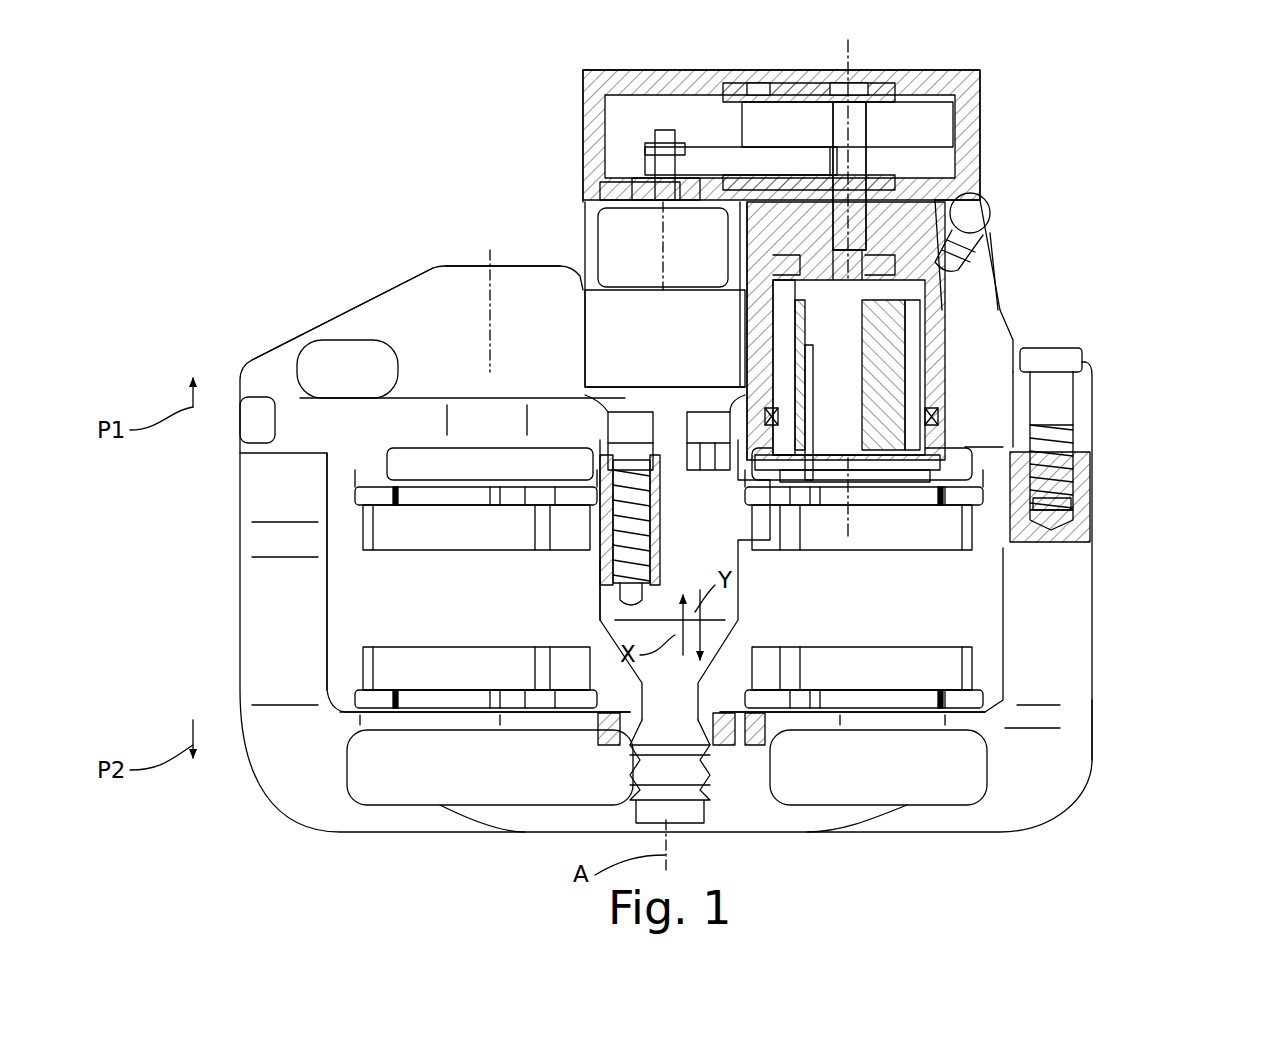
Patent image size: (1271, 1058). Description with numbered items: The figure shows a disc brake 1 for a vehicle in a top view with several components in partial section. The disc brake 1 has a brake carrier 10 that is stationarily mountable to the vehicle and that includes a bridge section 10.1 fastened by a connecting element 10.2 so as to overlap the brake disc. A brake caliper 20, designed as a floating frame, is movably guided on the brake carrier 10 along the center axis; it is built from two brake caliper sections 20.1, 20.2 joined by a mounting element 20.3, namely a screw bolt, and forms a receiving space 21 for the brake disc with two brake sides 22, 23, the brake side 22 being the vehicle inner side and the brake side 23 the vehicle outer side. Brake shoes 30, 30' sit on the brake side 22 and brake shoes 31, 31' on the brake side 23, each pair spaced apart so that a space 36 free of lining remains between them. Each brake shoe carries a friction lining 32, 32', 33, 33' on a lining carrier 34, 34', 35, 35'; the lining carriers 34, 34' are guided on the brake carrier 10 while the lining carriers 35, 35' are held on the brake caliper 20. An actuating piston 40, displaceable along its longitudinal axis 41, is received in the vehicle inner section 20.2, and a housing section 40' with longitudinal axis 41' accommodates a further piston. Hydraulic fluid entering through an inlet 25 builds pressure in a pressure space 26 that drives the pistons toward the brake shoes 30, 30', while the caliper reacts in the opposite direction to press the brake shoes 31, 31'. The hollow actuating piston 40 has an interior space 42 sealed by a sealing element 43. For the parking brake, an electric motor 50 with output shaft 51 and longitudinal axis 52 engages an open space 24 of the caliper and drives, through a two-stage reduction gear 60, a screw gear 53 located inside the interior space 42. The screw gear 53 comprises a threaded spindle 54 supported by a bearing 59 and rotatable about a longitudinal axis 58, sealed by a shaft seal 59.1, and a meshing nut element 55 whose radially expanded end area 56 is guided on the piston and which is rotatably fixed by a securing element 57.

The disc brake 1 is at (310, 298).
The brake carrier 10 is at (600, 405).
The bridge section 10.1 is at (618, 715).
The connecting element 10.2 is at (690, 405).
The brake caliper 20 is at (1013, 340).
The brake caliper section 20.1 is at (1075, 690).
The brake caliper section 20.2 is at (1080, 445).
The mounting element 20.3 is at (1055, 385).
The receiving space 21 is at (699, 631).
The brake side 22 is at (400, 565).
The brake side 23 is at (535, 635).
The open space 24 is at (646, 336).
The inlet 25 is at (970, 213).
The pressure space 26 is at (775, 270).
The brake shoe 30 is at (864, 536).
The brake shoe 30' is at (476, 543).
The brake shoe 31 is at (870, 633).
The brake shoe 31' is at (476, 624).
The friction lining 32 is at (862, 527).
The friction lining 32' is at (476, 527).
The friction lining 33 is at (862, 668).
The friction lining 33' is at (476, 668).
The lining carrier 34 is at (864, 547).
The lining carrier 34' is at (476, 421).
The lining carrier 35 is at (864, 746).
The lining carrier 35' is at (476, 746).
The space 36 is at (525, 728).
The actuating piston 40 is at (940, 342).
The actuating piston 40' is at (342, 286).
The longitudinal axis 41 is at (910, 278).
The longitudinal axis 41' is at (482, 237).
The interior space 42 is at (780, 300).
The sealing element 43 is at (945, 435).
The electric motor 50 is at (627, 237).
The output shaft 51 is at (655, 187).
The longitudinal axis 52 is at (650, 140).
The screw gear 53 is at (915, 335).
The threaded spindle 54 is at (940, 290).
The nut element 55 is at (1045, 432).
The end area 56 is at (900, 360).
The securing element 57 is at (1063, 505).
The longitudinal axis 58 is at (849, 176).
The bearing 59 is at (935, 270).
The sealing element 59.1 is at (980, 175).
The reduction gear 60 is at (780, 138).